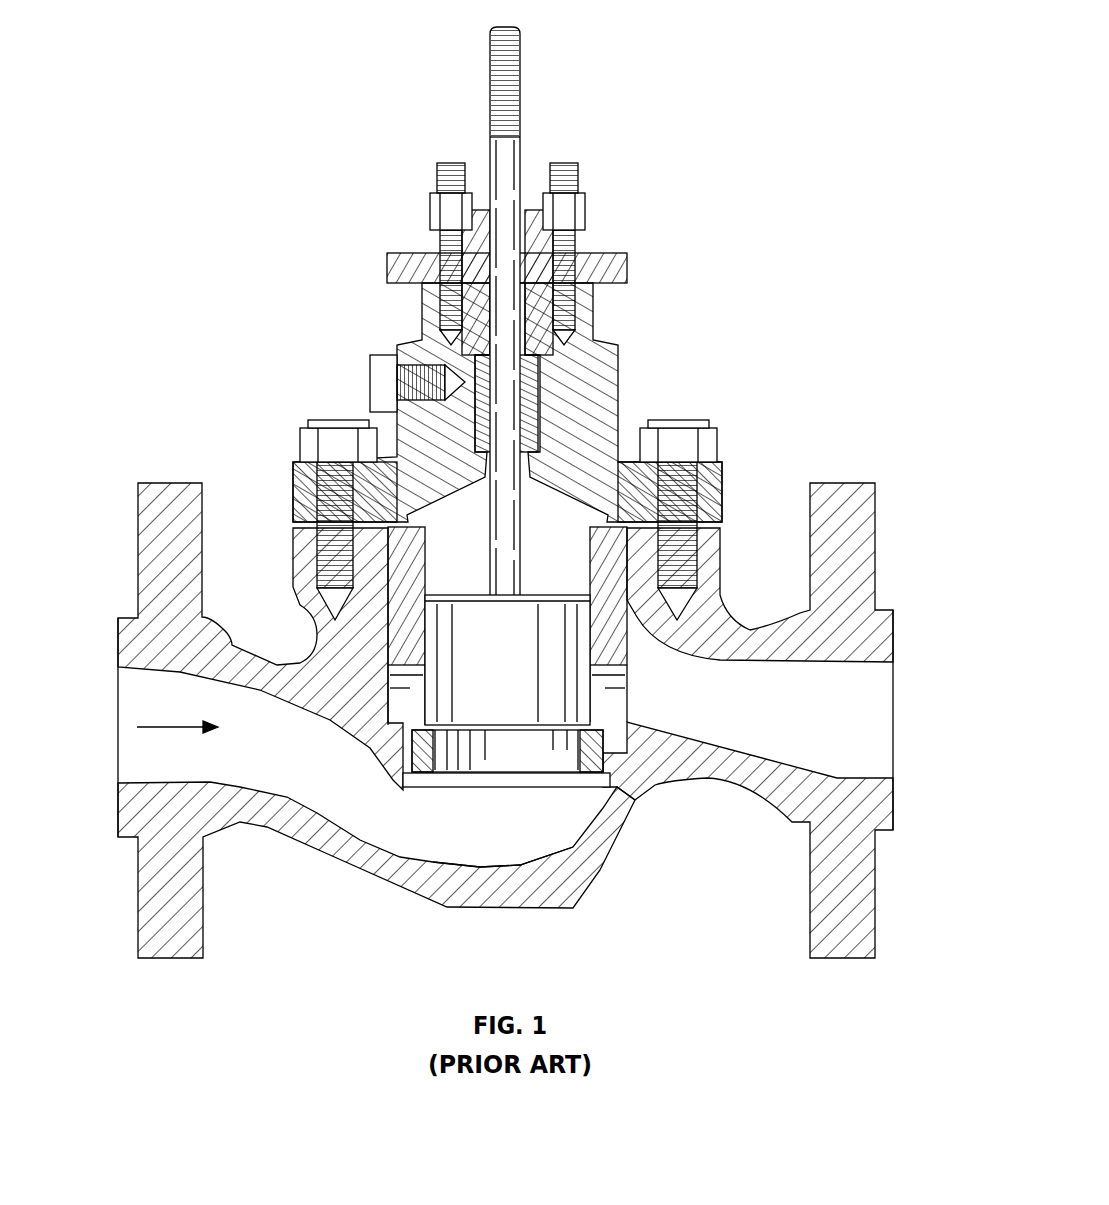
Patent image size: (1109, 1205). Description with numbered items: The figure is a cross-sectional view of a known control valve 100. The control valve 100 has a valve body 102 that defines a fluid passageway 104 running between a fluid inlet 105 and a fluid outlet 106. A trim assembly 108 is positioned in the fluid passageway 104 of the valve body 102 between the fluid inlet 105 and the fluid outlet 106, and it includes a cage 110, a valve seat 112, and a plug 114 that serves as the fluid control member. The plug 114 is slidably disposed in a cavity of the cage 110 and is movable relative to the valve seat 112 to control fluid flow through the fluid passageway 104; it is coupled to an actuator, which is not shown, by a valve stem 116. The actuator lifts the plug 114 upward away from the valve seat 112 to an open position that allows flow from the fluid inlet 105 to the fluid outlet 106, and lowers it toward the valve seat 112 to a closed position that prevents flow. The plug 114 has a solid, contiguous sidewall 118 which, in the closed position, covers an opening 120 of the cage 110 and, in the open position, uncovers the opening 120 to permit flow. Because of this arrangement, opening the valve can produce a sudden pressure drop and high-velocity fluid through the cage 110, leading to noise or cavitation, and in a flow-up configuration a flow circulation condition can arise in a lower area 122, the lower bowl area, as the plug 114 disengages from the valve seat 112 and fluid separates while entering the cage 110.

The control valve 100 is at (700, 62).
The valve body 102 is at (895, 642).
The fluid passageway 104 is at (292, 769).
The fluid inlet 105 is at (118, 702).
The fluid outlet 106 is at (895, 724).
The trim assembly 108 is at (465, 562).
The cage 110 is at (627, 665).
The valve seat 112 is at (591, 793).
The plug 114 is at (572, 708).
The valve stem 116 is at (508, 458).
The sidewall 118 is at (593, 695).
The opening 120 is at (410, 700).
The lower area 122 is at (532, 834).